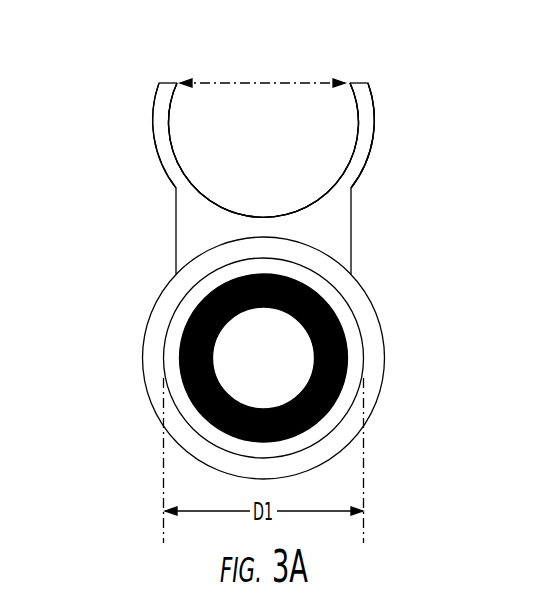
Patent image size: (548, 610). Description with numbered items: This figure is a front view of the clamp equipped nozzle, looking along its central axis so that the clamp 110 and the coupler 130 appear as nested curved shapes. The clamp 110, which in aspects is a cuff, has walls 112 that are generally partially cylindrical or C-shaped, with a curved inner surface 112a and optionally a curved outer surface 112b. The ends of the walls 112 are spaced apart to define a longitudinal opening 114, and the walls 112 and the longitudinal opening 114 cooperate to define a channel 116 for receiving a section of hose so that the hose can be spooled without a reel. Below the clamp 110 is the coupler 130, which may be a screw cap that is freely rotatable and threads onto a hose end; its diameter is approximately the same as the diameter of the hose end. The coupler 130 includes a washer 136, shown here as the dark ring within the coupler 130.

The clamp 110 is at (352, 211).
The walls 112 is at (155, 102).
The curved inner surface 112a is at (357, 114).
The curved outer surface 112b is at (374, 136).
The longitudinal opening 114 is at (268, 83).
The channel 116 is at (255, 160).
The coupler 130 is at (150, 400).
The washer 136 is at (184, 343).